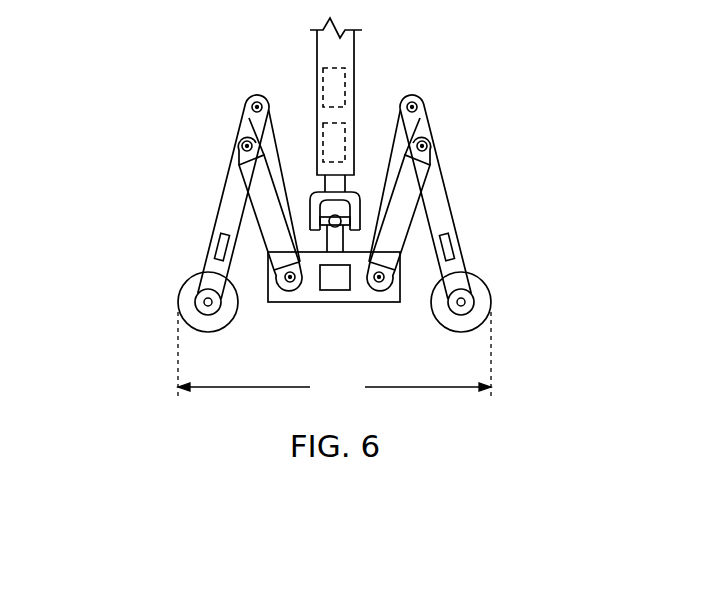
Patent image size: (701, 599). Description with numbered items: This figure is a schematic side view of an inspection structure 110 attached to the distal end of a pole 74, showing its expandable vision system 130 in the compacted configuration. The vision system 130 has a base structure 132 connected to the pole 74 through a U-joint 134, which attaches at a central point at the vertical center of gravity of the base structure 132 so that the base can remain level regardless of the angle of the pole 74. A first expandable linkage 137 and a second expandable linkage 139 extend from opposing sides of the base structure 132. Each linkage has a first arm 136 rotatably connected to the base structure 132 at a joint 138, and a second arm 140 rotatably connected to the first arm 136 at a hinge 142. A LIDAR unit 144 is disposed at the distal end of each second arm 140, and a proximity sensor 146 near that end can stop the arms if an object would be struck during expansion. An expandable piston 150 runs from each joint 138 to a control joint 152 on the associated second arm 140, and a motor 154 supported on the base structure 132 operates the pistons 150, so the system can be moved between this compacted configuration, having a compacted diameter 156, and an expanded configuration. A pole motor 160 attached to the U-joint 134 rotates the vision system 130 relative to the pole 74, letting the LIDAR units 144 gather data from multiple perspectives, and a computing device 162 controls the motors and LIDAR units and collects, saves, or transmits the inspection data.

The pole 74 is at (355, 67).
The inspection structure 110 is at (124, 141).
The expandable vision system 130 is at (545, 141).
The base structure 132 is at (322, 303).
The U-joint 134 is at (366, 188).
The first arm 136 is at (264, 131).
The first expandable linkage 137 is at (449, 72).
The joint 138 is at (280, 288).
The second expandable linkage 139 is at (220, 72).
The second arm 140 is at (228, 208).
The hinge 142 is at (250, 106).
The LIDAR unit 144 is at (183, 288).
The proximity sensor 146 is at (216, 244).
The expandable piston 150 is at (256, 178).
The control joint 152 is at (243, 146).
The motor 154 is at (335, 290).
The compacted diameter 156 is at (334, 356).
The pole motor 160 is at (317, 137).
The computing device 162 is at (318, 87).